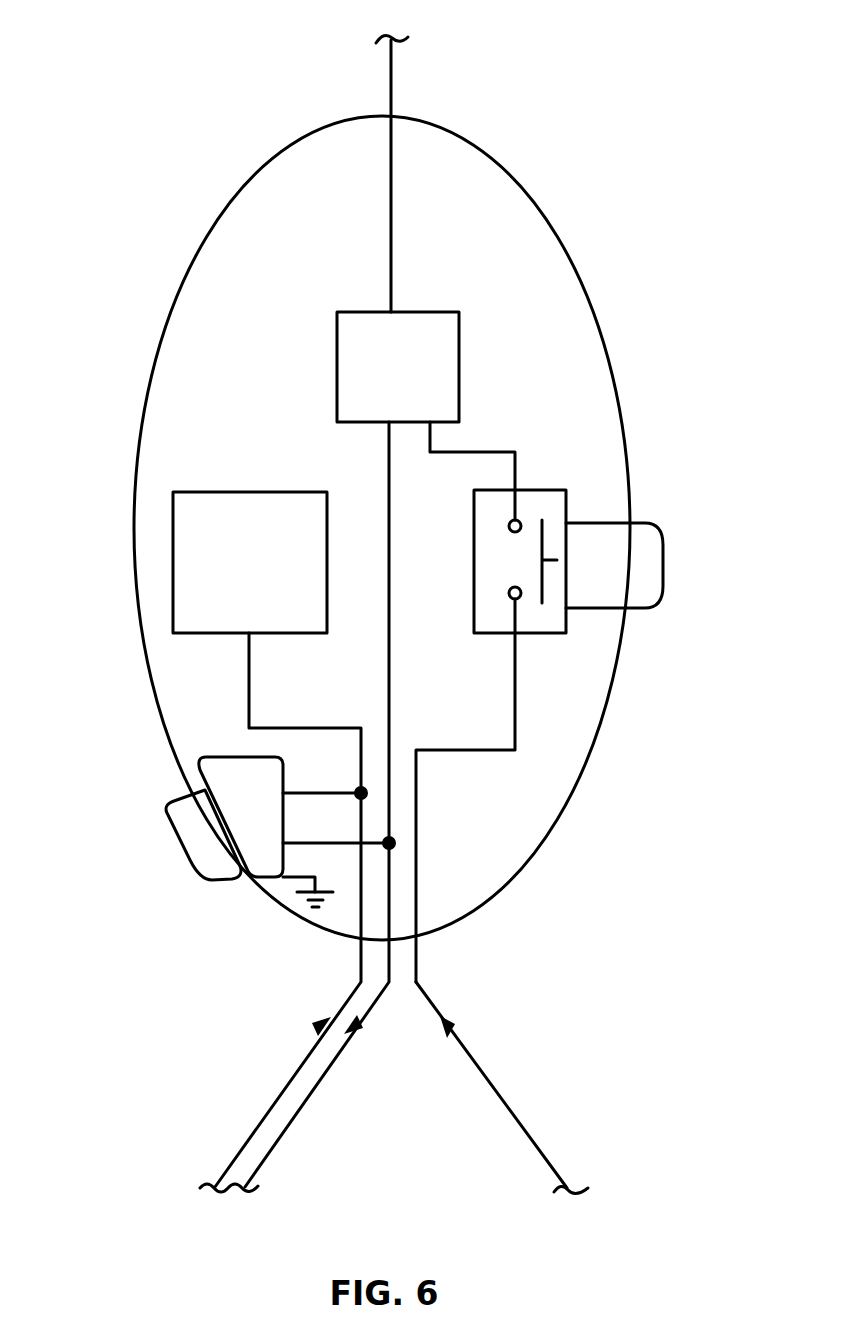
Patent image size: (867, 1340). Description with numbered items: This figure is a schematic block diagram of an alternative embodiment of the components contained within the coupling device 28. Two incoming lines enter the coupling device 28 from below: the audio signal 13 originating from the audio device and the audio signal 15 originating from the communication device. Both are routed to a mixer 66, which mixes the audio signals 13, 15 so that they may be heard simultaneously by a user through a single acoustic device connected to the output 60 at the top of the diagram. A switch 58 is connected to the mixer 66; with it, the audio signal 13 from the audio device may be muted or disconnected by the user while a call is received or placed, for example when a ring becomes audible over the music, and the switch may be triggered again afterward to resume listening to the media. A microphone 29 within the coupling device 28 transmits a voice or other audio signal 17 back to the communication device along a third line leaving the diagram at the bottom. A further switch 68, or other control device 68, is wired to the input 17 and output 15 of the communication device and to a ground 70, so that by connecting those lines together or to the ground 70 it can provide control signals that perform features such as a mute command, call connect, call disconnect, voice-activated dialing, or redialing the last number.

The coupling device 28 is at (145, 76).
The output 60 is at (392, 263).
The mixer 66 is at (398, 367).
The microphone 29 is at (267, 642).
The switch 58 is at (555, 490).
The switch or control device 68 is at (280, 818).
The ground 70 is at (305, 882).
The audio signal 17 is at (296, 1067).
The audio signal 15 is at (298, 1110).
The audio signal 13 is at (515, 1113).